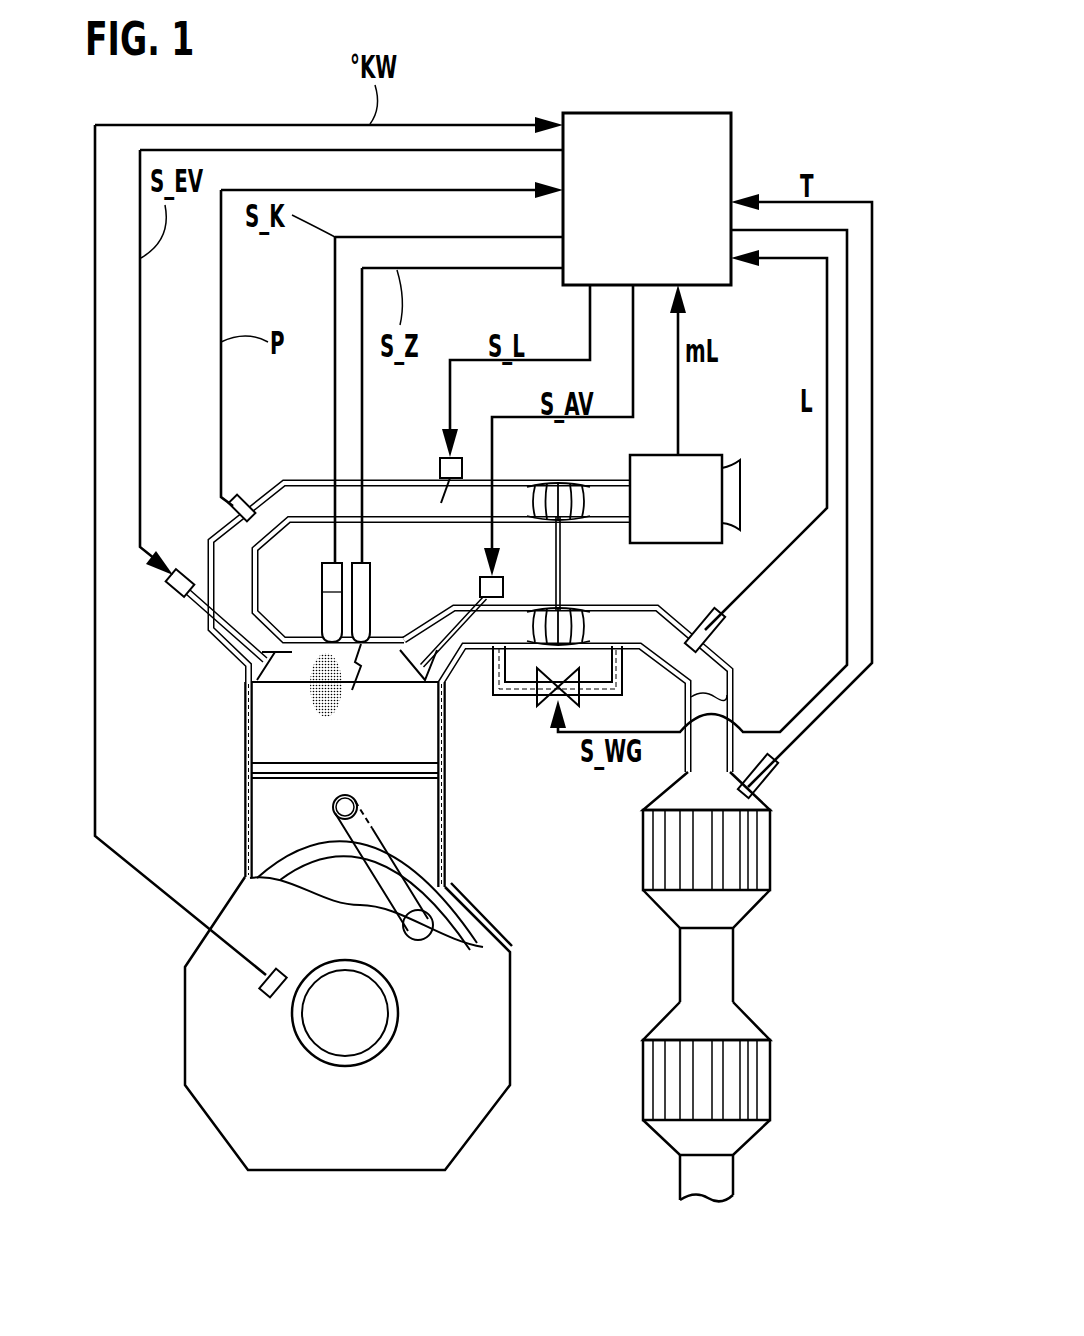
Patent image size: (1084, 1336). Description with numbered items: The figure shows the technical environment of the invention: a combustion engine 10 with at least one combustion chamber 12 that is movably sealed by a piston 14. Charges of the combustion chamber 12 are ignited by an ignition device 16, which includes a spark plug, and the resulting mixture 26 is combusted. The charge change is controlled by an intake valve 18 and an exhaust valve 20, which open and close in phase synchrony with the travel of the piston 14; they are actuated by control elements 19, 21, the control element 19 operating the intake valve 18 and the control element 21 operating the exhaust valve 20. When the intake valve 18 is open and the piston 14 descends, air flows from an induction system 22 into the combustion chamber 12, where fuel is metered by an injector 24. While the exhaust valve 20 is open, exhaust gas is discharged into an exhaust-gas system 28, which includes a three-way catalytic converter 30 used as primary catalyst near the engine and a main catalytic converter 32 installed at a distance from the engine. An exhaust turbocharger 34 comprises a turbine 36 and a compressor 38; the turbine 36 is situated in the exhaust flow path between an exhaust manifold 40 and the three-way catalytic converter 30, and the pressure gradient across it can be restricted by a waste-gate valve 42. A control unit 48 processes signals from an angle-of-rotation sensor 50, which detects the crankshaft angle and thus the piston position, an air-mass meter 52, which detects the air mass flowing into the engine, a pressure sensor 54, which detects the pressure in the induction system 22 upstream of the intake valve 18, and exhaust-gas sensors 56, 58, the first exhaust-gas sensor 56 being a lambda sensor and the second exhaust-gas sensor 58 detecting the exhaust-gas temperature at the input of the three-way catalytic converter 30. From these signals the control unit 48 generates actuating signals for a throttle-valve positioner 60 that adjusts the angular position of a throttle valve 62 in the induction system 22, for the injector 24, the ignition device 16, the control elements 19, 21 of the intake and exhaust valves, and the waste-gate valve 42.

The combustion engine 10 is at (203, 1133).
The combustion chamber 12 is at (252, 745).
The piston 14 is at (268, 826).
The ignition device 16 is at (333, 590).
The intake valve 18 is at (194, 603).
The control element 19 is at (170, 598).
The exhaust valve 20 is at (424, 650).
The control element 21 is at (503, 585).
The induction system 22 is at (205, 512).
The injector 24 is at (332, 625).
The fuel-air mixture 26 is at (332, 718).
The exhaust-gas system 28 is at (666, 1152).
The three-way catalytic converter 30 is at (755, 853).
The main catalytic converter 32 is at (755, 1090).
The exhaust turbocharger 34 is at (628, 575).
The turbine 36 is at (586, 610).
The compressor 38 is at (555, 482).
The exhaust manifold 40 is at (462, 662).
The waste-gate valve 42 is at (545, 705).
The control unit 48 is at (734, 124).
The angle-of-rotation sensor 50 is at (266, 997).
The air-mass meter 52 is at (700, 466).
The pressure sensor 54 is at (243, 496).
The first exhaust-gas sensor 56 is at (728, 630).
The second exhaust-gas sensor 58 is at (776, 782).
The throttle-valve positioner 60 is at (440, 465).
The throttle valve 62 is at (445, 508).